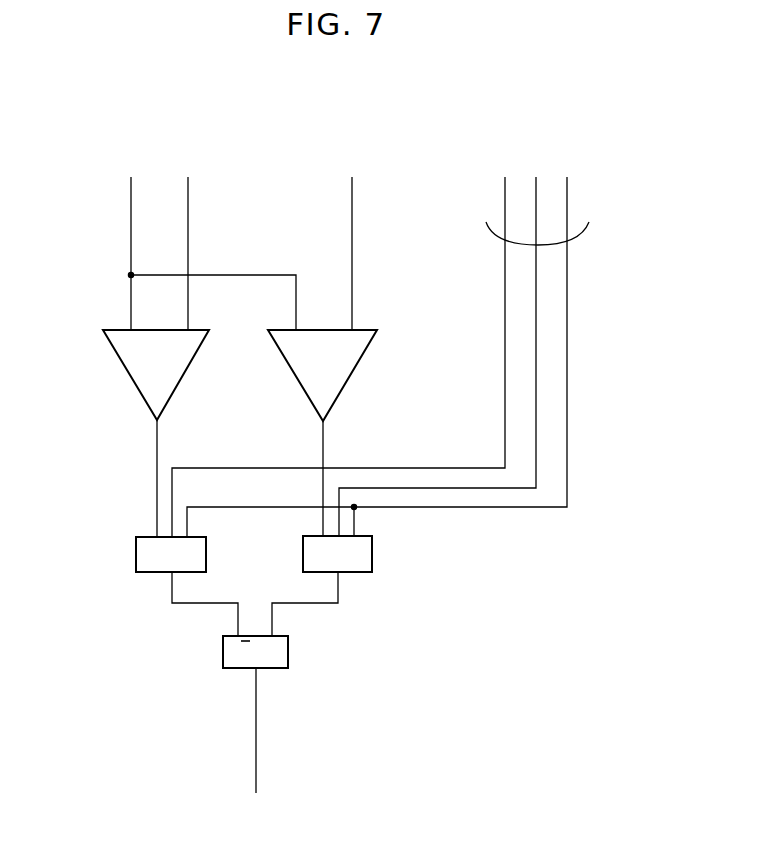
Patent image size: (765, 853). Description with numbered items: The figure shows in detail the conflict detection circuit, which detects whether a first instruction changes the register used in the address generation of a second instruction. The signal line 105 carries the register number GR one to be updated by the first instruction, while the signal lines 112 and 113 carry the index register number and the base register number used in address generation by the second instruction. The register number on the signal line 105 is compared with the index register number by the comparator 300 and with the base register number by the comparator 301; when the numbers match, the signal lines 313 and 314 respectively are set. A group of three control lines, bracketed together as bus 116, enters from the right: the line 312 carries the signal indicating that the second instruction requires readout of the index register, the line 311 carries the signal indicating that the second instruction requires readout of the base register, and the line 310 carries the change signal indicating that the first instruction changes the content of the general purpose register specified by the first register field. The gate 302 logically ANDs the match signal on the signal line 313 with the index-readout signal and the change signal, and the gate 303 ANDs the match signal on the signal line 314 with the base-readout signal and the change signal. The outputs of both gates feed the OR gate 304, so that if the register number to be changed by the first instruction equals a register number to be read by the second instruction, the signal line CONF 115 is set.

The signal line 105 is at (130, 223).
The signal line 112 is at (188, 223).
The signal line 113 is at (352, 218).
The control signal bus (NEED2X, NEED2B, CHG 1) 116 is at (588, 234).
The comparator 300 is at (180, 385).
The comparator 301 is at (348, 385).
The gate 302 is at (136, 555).
The gate 303 is at (372, 552).
The OR gate 304 is at (288, 652).
The line 310 is at (567, 313).
The line 311 is at (536, 378).
The line 312 is at (505, 296).
The signal line 313 is at (157, 445).
The signal line 314 is at (323, 442).
The signal line CONF 115 is at (256, 727).